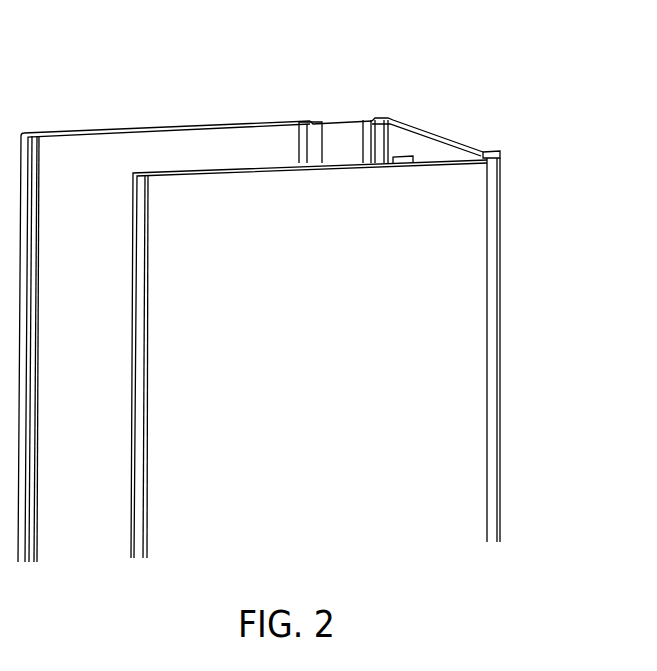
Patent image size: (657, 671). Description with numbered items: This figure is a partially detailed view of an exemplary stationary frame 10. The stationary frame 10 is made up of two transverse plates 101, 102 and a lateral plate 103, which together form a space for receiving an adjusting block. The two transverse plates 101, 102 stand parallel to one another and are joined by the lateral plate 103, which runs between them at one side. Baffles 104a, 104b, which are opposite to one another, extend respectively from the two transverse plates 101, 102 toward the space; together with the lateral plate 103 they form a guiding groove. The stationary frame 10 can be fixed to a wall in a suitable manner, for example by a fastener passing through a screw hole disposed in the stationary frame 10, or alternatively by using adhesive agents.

The stationary frame 10 is at (308, 517).
The transverse plate 101 is at (463, 273).
The transverse plate 102 is at (68, 152).
The lateral plate 103 is at (436, 135).
The baffle 104a is at (298, 139).
The baffle 104b is at (410, 163).